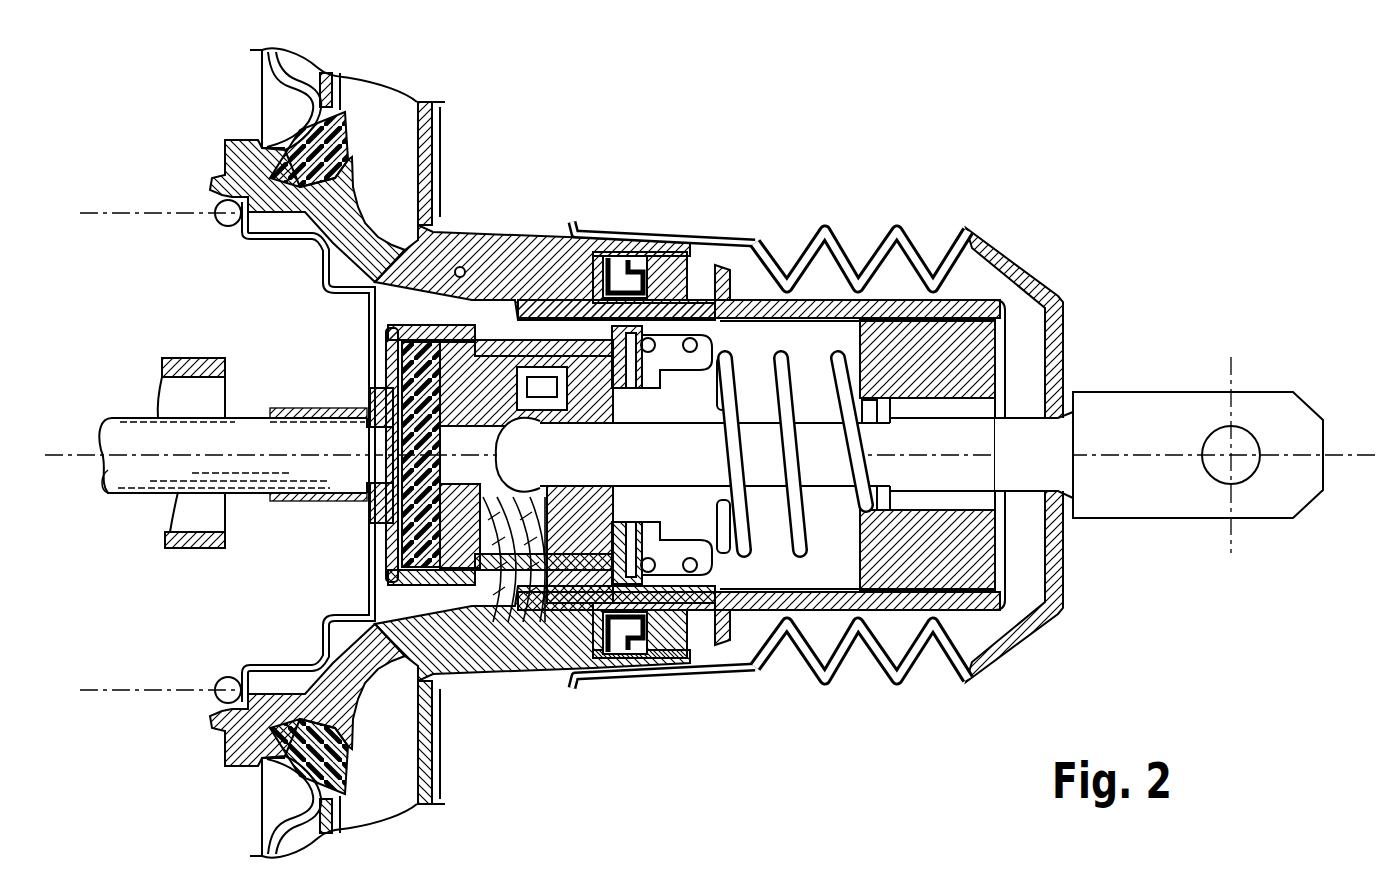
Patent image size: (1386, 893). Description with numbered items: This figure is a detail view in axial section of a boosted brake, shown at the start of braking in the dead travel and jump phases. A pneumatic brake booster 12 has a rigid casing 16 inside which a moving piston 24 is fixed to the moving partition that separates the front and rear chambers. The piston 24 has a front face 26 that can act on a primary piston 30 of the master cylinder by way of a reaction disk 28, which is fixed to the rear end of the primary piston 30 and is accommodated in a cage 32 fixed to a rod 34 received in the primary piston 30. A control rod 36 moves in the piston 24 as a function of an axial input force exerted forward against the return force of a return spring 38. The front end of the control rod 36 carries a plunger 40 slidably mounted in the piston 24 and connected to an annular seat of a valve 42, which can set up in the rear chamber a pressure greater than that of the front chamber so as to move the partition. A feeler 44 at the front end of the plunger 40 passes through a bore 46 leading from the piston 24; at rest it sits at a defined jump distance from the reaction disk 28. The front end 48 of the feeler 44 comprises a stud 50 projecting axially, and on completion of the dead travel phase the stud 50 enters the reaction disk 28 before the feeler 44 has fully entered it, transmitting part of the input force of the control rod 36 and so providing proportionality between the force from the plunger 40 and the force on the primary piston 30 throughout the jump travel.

The pneumatic brake booster 12 is at (444, 125).
The rigid casing 16 is at (433, 178).
The moving piston 24 is at (397, 260).
The front face 26 is at (452, 365).
The reaction disk 28 is at (395, 313).
The primary piston 30 is at (190, 367).
The cage 32 is at (393, 557).
The rod 34 is at (247, 433).
The control rod 36 is at (1023, 475).
The return spring 38 is at (812, 612).
The plunger 40 is at (497, 636).
The valve 42 is at (660, 408).
The feeler 44 is at (393, 552).
The bore 46 is at (402, 620).
The front end 48 is at (393, 358).
The stud 50 is at (393, 472).